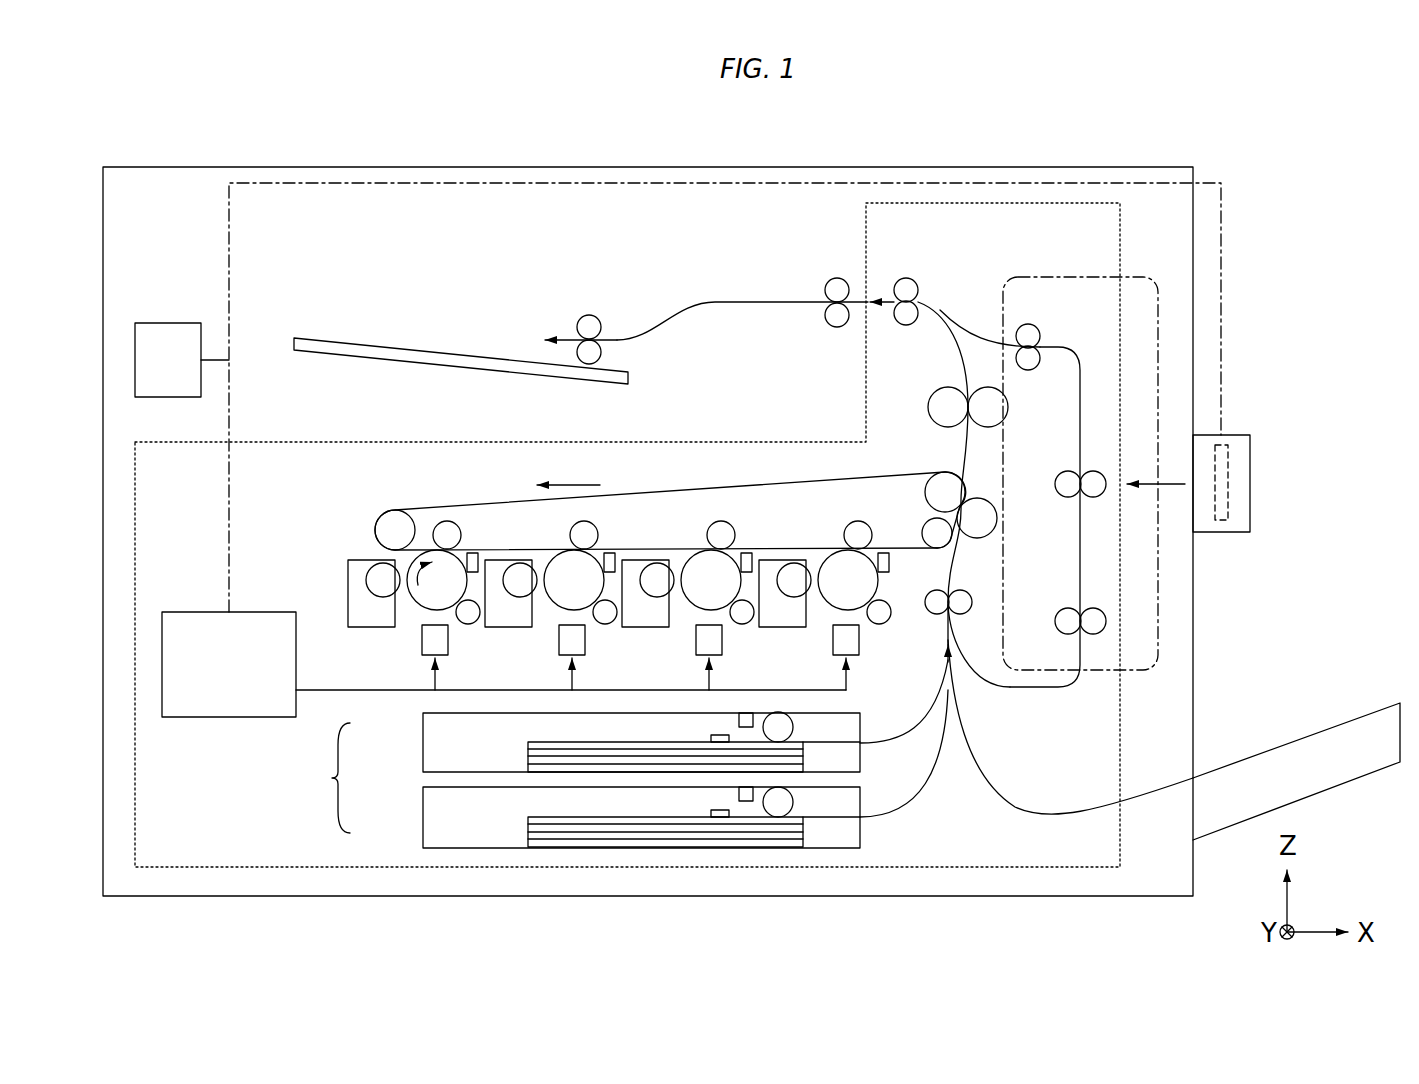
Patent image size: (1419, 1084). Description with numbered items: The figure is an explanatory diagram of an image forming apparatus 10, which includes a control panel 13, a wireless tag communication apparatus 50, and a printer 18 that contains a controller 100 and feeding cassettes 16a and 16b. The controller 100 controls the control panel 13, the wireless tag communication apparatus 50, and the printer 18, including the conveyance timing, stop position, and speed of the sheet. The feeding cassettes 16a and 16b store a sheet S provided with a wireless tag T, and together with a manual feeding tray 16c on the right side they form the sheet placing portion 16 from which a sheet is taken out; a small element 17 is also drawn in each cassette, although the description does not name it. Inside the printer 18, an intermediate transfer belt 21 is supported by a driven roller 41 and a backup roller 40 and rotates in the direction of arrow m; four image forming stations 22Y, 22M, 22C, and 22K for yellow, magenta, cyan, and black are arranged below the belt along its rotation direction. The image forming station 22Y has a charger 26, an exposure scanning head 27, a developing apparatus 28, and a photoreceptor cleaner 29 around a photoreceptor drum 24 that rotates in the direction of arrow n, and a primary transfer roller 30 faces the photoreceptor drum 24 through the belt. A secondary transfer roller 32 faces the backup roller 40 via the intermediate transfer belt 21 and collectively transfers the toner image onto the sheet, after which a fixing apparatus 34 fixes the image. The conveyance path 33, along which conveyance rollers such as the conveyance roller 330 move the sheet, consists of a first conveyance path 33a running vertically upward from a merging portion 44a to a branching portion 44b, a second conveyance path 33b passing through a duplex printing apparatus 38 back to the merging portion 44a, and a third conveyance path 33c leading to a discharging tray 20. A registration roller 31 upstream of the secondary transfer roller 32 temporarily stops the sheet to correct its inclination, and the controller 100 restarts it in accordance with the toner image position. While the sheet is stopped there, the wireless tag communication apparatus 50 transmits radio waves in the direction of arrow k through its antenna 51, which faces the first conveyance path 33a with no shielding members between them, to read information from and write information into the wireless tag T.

The image forming apparatus 10 is at (270, 150).
The control panel 13 is at (168, 323).
The printer 18 is at (178, 442).
The discharging tray 20 is at (430, 350).
The intermediate transfer belt 21 is at (752, 486).
The image forming station 22Y is at (410, 576).
The image forming station 22M is at (593, 632).
The image forming station 22C is at (730, 632).
The image forming station 22K is at (825, 626).
The photoreceptor drum 24 is at (408, 560).
The charger 26 is at (470, 624).
The exposure scanning head 27 is at (422, 650).
The developing apparatus 28 is at (347, 580).
The photoreceptor cleaner 29 is at (472, 553).
The primary transfer roller 30 is at (447, 521).
The registration roller 31 is at (973, 603).
The secondary transfer roller 32 is at (978, 539).
The conveyance path 33 is at (1016, 700).
The first conveyance path 33a is at (970, 455).
The second conveyance path 33b is at (981, 336).
The third conveyance path 33c is at (864, 300).
The fixing apparatus 34 is at (958, 382).
The duplex printing apparatus 38 is at (1133, 277).
The backup roller 40 is at (925, 494).
The driven roller 41 is at (383, 515).
The merging portion 44a is at (960, 662).
The branching portion 44b is at (944, 312).
The wireless tag communication apparatus 50 is at (1232, 435).
The antenna 51 is at (1228, 480).
The controller 100 is at (226, 722).
The sheet placing portion 16 is at (579, 780).
The feeding cassette 16a is at (423, 739).
The feeding cassette 16b is at (423, 815).
The manual feeding tray 16c is at (1277, 745).
The sheet sensor 17 is at (745, 802).
The conveyance roller 330 is at (1063, 498).
The sheet S is at (614, 820).
The wireless tag T is at (720, 818).
The arrow k is at (1156, 469).
The arrow m is at (568, 463).
The arrow n is at (423, 592).